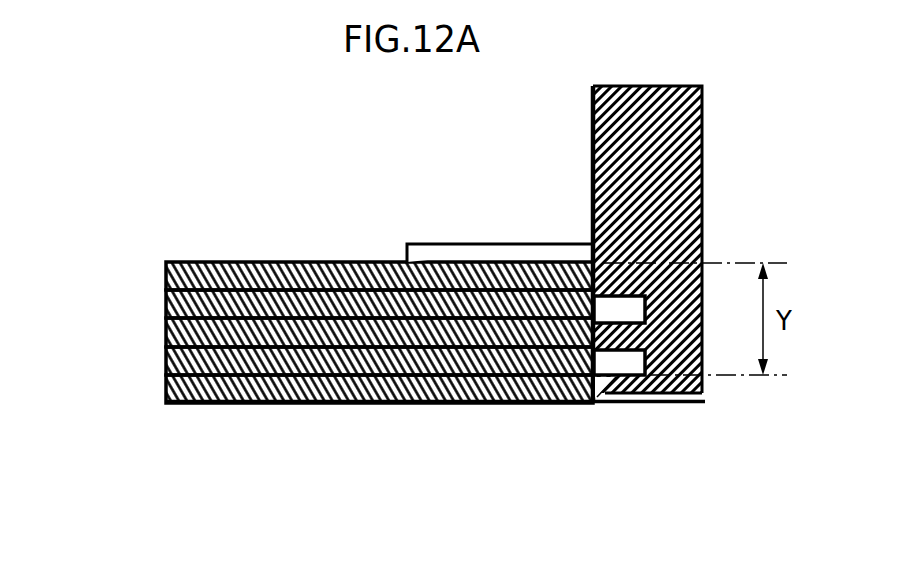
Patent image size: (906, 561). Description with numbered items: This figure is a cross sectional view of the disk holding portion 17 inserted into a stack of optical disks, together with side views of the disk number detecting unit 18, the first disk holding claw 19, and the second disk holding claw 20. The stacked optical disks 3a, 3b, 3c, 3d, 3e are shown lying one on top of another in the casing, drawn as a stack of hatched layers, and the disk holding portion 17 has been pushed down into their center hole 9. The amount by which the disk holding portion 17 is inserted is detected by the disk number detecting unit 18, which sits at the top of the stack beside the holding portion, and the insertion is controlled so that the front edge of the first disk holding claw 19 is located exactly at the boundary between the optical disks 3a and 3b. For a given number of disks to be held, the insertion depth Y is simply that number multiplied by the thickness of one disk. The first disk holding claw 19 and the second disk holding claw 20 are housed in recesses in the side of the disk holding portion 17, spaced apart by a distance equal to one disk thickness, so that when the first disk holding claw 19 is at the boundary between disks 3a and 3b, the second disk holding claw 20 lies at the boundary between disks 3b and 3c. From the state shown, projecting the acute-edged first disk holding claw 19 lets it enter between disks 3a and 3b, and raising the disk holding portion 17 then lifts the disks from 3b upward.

The optical disk 3a is at (280, 392).
The optical disk 3b is at (242, 360).
The optical disk 3c is at (230, 334).
The optical disk 3d is at (238, 300).
The optical disk 3e is at (240, 272).
The center hole 9 is at (638, 403).
The disk holding portion 17 is at (635, 195).
The disk number detecting unit 18 is at (507, 252).
The first disk holding claw 19 is at (598, 403).
The second disk holding claw 20 is at (620, 305).